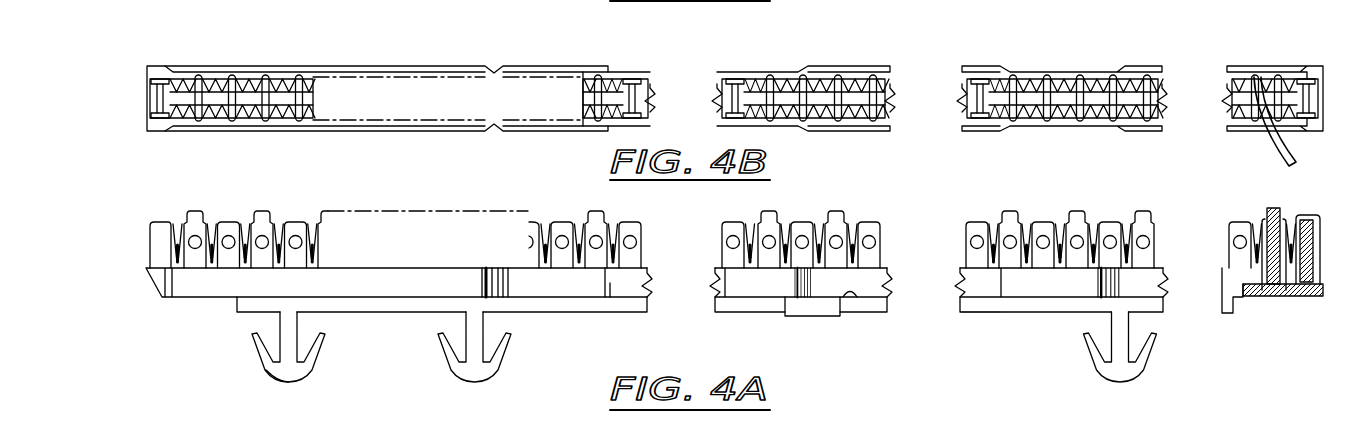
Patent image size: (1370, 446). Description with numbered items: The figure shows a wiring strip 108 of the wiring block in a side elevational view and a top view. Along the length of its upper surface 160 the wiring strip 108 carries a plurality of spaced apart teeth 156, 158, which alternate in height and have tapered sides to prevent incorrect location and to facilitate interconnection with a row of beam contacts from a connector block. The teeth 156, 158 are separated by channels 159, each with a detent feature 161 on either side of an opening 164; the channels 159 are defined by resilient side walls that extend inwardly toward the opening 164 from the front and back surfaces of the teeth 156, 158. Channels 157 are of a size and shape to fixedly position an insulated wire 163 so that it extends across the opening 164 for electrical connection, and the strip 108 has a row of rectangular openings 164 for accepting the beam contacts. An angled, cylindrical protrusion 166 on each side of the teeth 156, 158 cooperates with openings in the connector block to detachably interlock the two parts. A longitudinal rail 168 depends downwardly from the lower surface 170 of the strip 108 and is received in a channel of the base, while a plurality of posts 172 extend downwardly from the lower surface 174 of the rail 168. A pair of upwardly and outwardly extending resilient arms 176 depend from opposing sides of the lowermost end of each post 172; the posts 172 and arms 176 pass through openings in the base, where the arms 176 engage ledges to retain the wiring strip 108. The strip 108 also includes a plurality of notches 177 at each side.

In FIG. 4B, the wiring strip 108 is at (866, 59).
In FIG. 4A, the wiring strip 108 is at (1132, 199).
In FIG. 4B, the teeth 156 is at (305, 79).
In FIG. 4A, the teeth 156 is at (229, 222).
In FIG. 4B, the channels 157 is at (1290, 78).
In FIG. 4B, the teeth 158 is at (266, 121).
In FIG. 4A, the teeth 158 is at (263, 214).
In FIG. 4B, the channels 159 is at (1130, 80).
In FIG. 4A, the channels 159 is at (1298, 297).
In FIG. 4A, the upper surface 160 is at (752, 266).
In FIG. 4A, the detent feature 161 is at (1306, 228).
In FIG. 4B, the insulated wire 163 is at (1275, 150).
In FIG. 4B, the opening 164 is at (747, 74).
In FIG. 4A, the opening 164 is at (1279, 295).
In FIG. 4B, the angled, cylindrical protrusion 166 is at (965, 128).
In FIG. 4A, the angled, cylindrical protrusion 166 is at (738, 236).
In FIG. 4A, the longitudinal rail 168 is at (968, 308).
In FIG. 4A, the lower surface 170 is at (850, 299).
In FIG. 4A, the post 172 is at (284, 323).
In FIG. 4A, the lower surface 174 is at (1038, 313).
In FIG. 4A, the resilient arms 176 is at (266, 369).
In FIG. 4A, the notches 177 is at (485, 298).